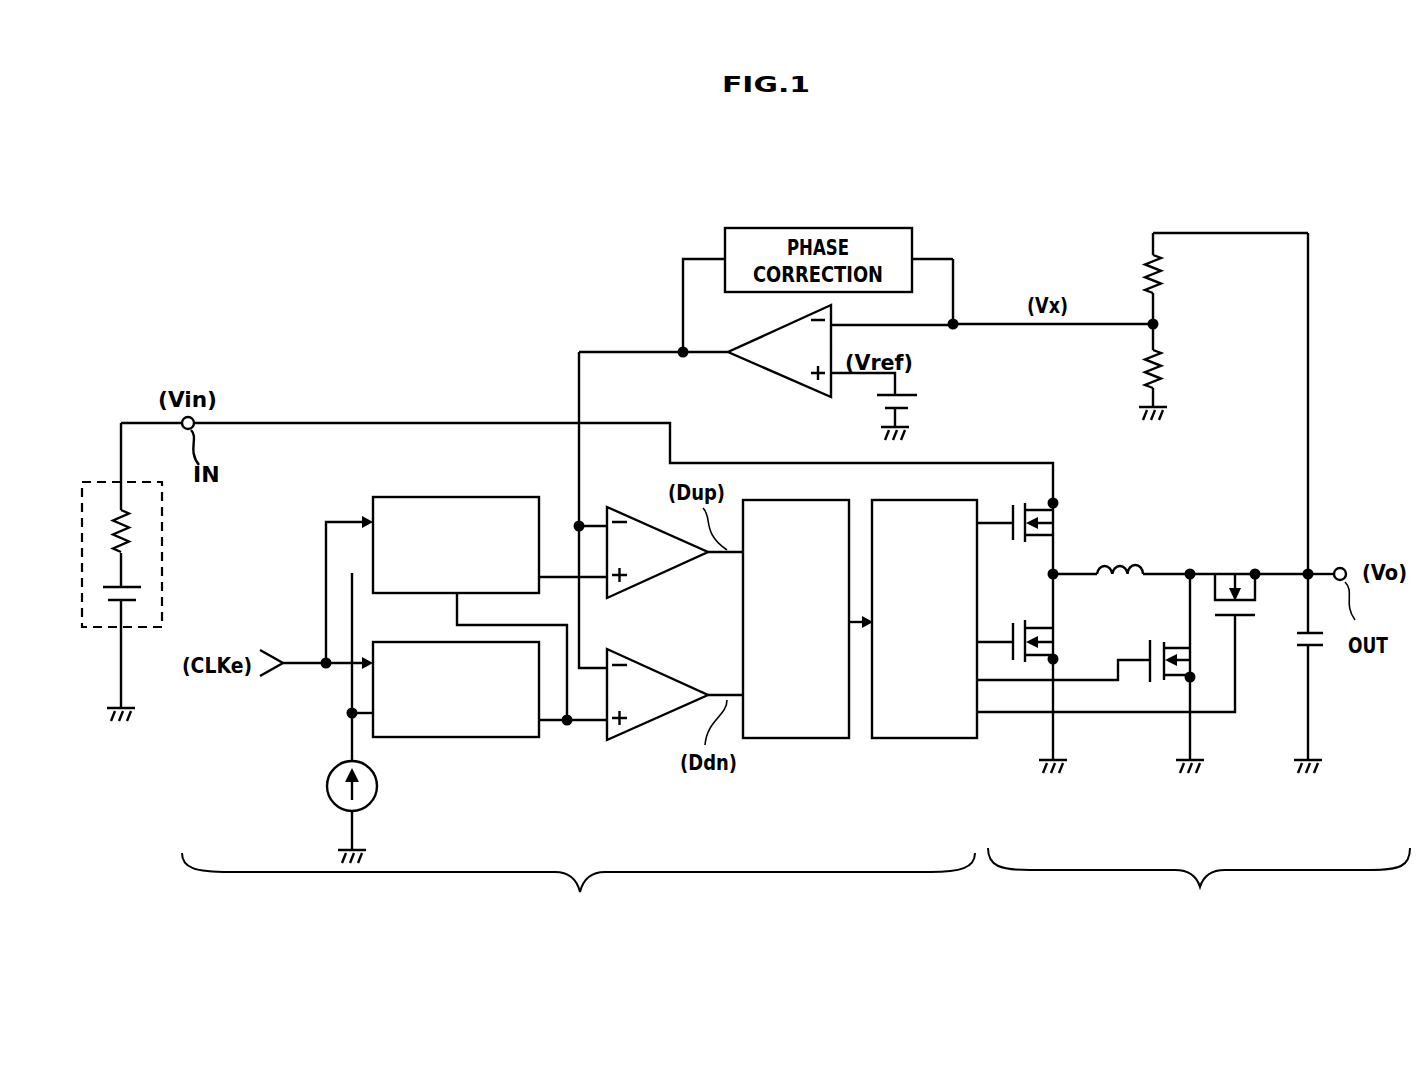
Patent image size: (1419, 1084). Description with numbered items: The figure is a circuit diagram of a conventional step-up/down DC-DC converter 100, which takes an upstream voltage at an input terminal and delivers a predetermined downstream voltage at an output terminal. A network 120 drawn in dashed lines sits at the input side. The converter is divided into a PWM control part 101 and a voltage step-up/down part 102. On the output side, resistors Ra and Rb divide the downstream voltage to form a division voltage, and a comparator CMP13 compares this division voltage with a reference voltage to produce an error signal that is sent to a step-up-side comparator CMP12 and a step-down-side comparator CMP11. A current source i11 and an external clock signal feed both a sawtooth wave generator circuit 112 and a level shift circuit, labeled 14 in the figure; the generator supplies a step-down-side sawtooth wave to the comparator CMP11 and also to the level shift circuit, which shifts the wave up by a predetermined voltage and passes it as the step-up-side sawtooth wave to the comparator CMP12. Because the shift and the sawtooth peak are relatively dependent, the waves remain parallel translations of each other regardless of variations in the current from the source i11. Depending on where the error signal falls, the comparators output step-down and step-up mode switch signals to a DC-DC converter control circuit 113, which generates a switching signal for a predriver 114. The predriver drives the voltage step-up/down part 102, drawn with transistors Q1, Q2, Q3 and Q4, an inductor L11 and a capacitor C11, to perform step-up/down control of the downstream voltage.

The step-up/down DC-DC converter 100 is at (1137, 210).
The PWM control part 101 is at (578, 890).
The voltage step-up/down part 102 is at (1199, 886).
The sawtooth wave generator circuit 112 is at (510, 740).
The DC-DC converter control circuit 113 is at (803, 740).
The predriver 114 is at (927, 740).
The RC input network 120 is at (167, 543).
The level shift circuit 14 is at (515, 497).
The current source i11 is at (377, 790).
The step-down-side comparator CMP11 is at (675, 694).
The step-up-side comparator CMP12 is at (675, 552).
The comparator CMP13 is at (766, 372).
The high-side transistor Q1 is at (1033, 524).
The low-side transistor Q2 is at (1037, 673).
The transistor Q3 is at (1174, 673).
The transistor Q4 is at (1249, 579).
The inductor L11 is at (1121, 552).
The output capacitor C11 is at (1287, 503).
The resistor Ra is at (1174, 278).
The resistor Rb is at (1171, 371).